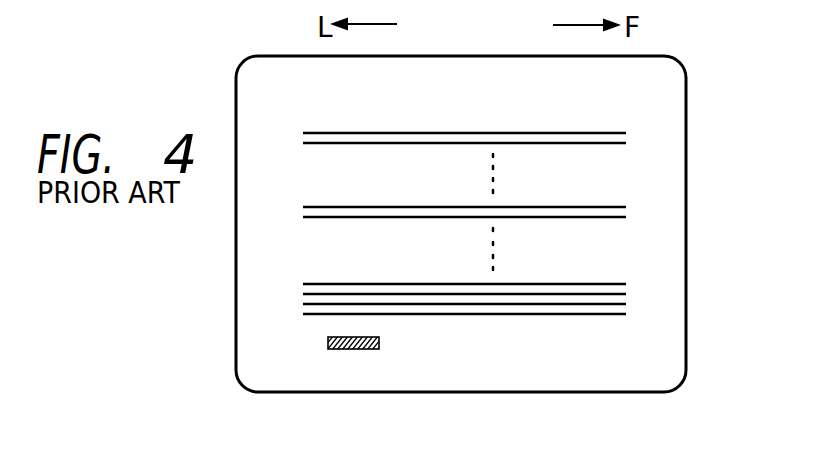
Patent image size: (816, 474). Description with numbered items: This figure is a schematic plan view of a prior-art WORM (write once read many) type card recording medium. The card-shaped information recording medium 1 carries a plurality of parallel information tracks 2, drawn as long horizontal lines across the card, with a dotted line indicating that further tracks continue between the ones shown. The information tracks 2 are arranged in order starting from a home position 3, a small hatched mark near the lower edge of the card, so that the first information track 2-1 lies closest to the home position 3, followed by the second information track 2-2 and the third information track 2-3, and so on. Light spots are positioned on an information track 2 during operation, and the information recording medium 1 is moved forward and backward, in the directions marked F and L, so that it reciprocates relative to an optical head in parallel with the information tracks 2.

The information recording medium 1 is at (680, 88).
The information track 2 is at (617, 207).
The first information track 2-1 is at (305, 316).
The second information track 2-2 is at (303, 304).
The third information track 2-3 is at (303, 294).
The home position 3 is at (380, 341).